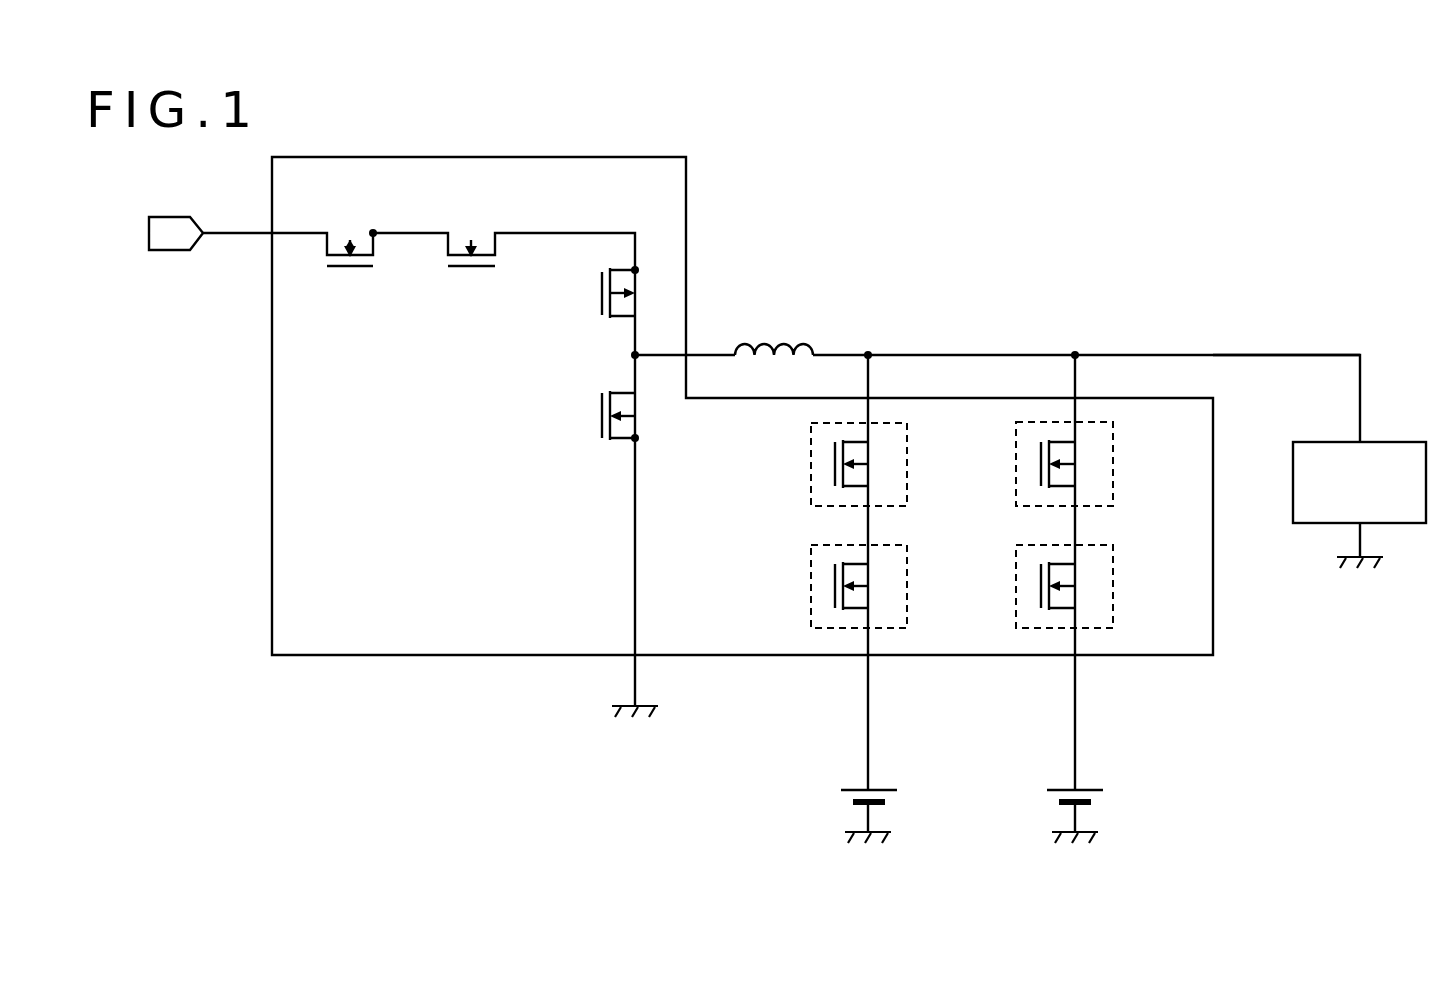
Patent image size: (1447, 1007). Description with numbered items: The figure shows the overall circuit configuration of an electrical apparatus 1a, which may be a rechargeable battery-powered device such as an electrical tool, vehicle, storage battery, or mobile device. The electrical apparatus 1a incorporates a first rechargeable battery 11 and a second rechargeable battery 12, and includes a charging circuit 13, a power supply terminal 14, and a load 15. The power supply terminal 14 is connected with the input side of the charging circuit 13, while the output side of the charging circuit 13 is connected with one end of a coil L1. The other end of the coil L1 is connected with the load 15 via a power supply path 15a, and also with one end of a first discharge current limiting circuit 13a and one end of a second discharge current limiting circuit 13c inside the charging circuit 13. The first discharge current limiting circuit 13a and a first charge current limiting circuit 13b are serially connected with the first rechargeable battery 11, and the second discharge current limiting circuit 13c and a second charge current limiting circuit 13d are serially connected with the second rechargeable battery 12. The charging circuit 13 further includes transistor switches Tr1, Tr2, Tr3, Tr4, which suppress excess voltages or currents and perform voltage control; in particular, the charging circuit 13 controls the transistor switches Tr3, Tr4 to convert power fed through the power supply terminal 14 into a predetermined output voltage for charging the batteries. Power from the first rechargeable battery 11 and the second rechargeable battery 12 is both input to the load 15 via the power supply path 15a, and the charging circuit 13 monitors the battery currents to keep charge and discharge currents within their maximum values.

The electrical apparatus 1a is at (1342, 832).
The first rechargeable battery 11 is at (905, 795).
The second rechargeable battery 12 is at (1112, 795).
The charging circuit 13 is at (686, 193).
The first discharge current limiting circuit 13a is at (912, 485).
The first charge current limiting circuit 13b is at (912, 607).
The second discharge current limiting circuit 13c is at (1118, 485).
The second charge current limiting circuit 13d is at (1118, 607).
The power supply terminal 14 is at (164, 217).
The load 15 is at (1359, 482).
The power supply path 15a is at (1305, 353).
The transistor switch Tr1 is at (350, 272).
The transistor switch Tr2 is at (471, 272).
The transistor switch Tr3 is at (593, 293).
The transistor switch Tr4 is at (593, 415).
The coil L1 is at (774, 325).